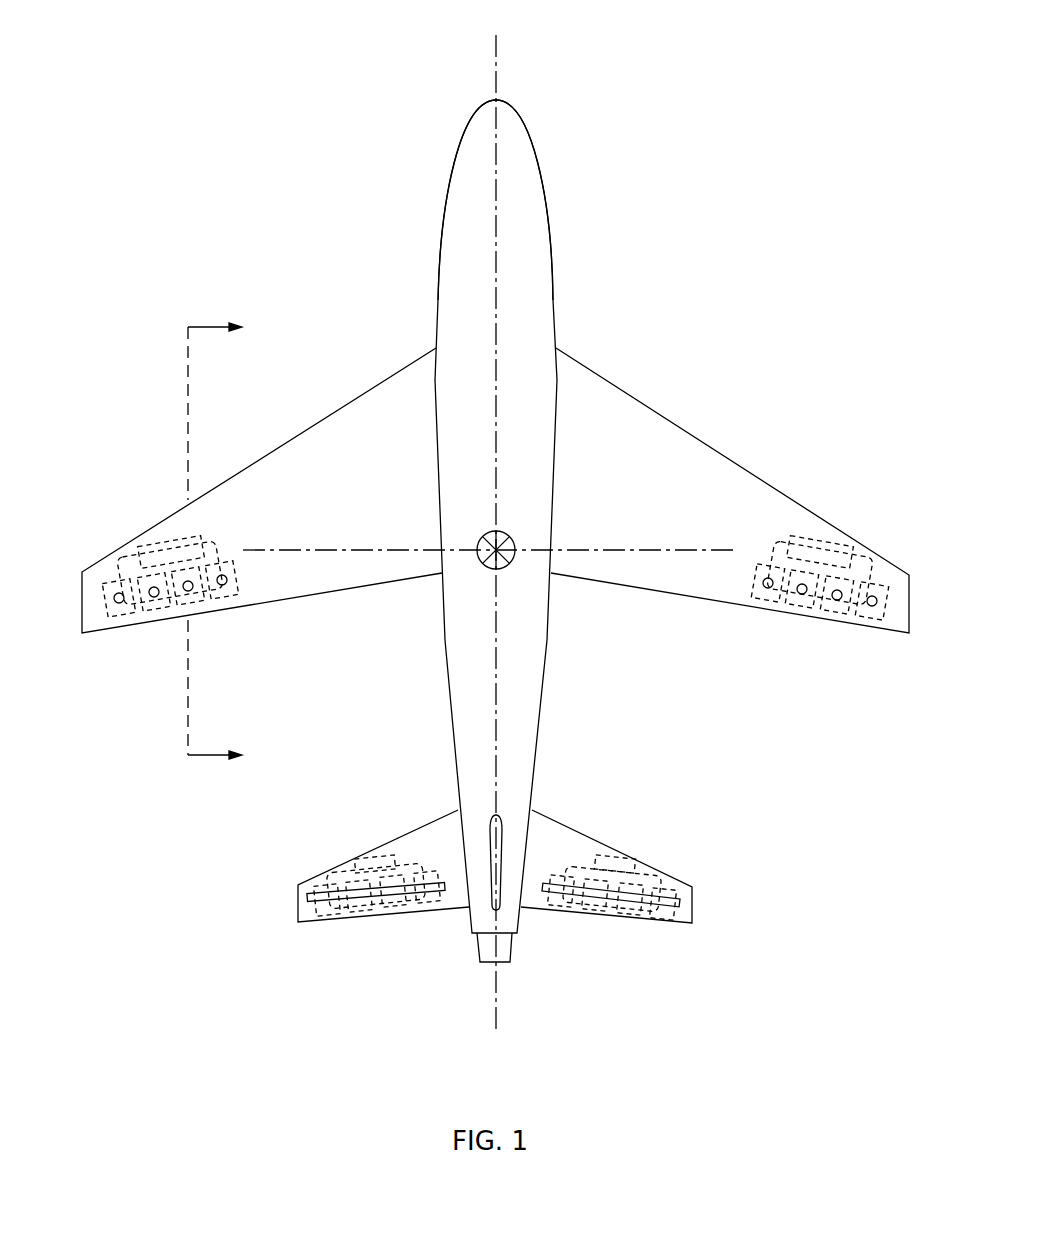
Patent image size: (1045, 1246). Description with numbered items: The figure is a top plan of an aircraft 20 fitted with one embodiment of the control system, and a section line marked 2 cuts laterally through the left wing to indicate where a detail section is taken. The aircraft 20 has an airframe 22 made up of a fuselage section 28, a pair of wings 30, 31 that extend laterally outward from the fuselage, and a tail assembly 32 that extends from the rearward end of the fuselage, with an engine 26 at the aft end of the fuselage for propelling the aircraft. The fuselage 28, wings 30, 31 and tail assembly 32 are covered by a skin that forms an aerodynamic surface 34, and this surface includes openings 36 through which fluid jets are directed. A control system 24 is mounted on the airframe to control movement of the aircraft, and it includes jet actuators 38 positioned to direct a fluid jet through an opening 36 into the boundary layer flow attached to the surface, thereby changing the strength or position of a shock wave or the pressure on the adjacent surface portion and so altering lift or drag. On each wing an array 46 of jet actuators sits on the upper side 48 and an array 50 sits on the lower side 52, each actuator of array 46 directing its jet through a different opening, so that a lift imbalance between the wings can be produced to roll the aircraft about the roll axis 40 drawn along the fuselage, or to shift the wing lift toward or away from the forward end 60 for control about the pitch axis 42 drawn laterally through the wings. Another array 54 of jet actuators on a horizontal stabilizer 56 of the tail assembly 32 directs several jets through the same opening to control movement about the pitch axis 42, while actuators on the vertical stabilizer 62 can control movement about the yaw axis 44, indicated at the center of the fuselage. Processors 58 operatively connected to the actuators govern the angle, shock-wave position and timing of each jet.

The aircraft 20 is at (406, 486).
The airframe 22 is at (237, 462).
The control system 24 is at (164, 633).
The engine 26 is at (470, 958).
The fuselage section 28 is at (546, 666).
The wing 30 is at (340, 407).
The wing 31 is at (655, 411).
The tail assembly 32 is at (582, 826).
The aerodynamic surface 34 is at (325, 516).
The opening 36 is at (150, 613).
The jet actuator 38 is at (112, 580).
The roll axis 40 is at (496, 65).
The pitch axis 42 is at (243, 548).
The yaw axis 44 is at (508, 562).
The array of jet actuators 46 is at (90, 570).
The upper side 48 is at (316, 463).
The array of jet actuators 50 is at (118, 641).
The lower side 52 is at (404, 366).
The array of jet actuators 54 is at (290, 927).
The horizontal stabilizer 56 is at (540, 812).
The processor 58 is at (168, 540).
The forward end 60 is at (534, 106).
The vertical stabilizer 62 is at (493, 825).
The section line 2- 2 is at (224, 542).